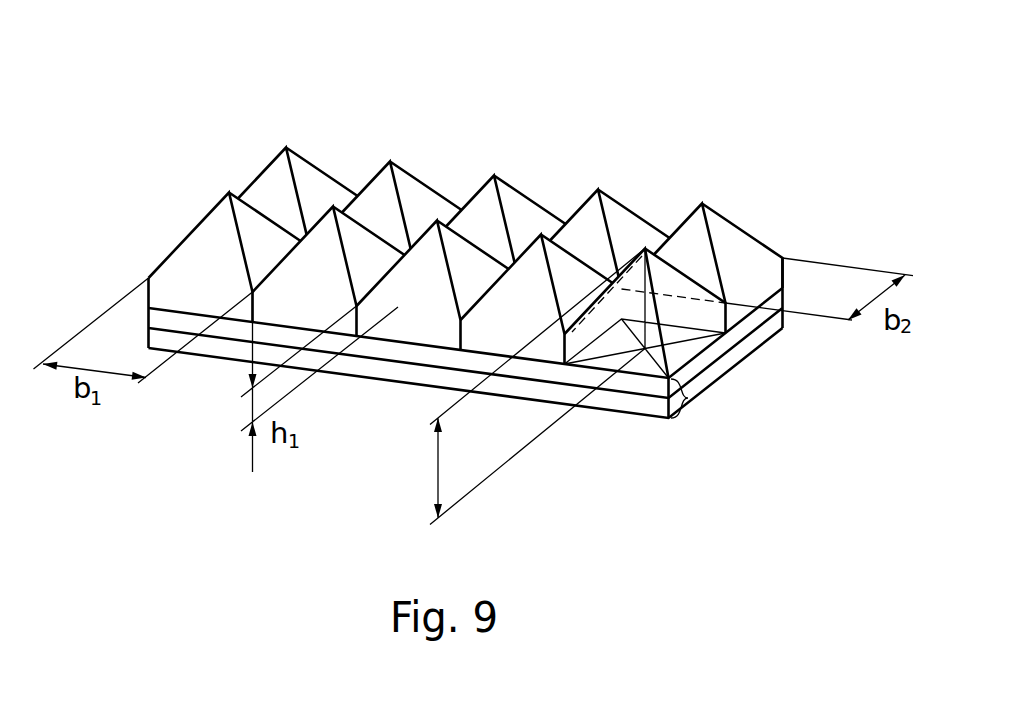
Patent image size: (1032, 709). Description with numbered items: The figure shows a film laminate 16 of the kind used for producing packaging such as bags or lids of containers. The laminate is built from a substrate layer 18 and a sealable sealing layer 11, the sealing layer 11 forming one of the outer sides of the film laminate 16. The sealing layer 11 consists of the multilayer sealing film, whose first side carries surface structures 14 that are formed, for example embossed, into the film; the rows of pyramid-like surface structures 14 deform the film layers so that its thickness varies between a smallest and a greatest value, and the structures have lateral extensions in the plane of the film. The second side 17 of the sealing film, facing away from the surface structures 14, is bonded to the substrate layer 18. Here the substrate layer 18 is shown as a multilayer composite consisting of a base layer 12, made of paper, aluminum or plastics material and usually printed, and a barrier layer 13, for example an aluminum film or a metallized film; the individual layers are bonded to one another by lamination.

The sealing layer 11 is at (216, 255).
The base layer 12 is at (777, 328).
The barrier layer 13 is at (737, 337).
The surface structures 14 is at (610, 168).
The film laminate 16 is at (350, 448).
The second side 17 is at (243, 322).
The substrate layer 18 is at (688, 398).